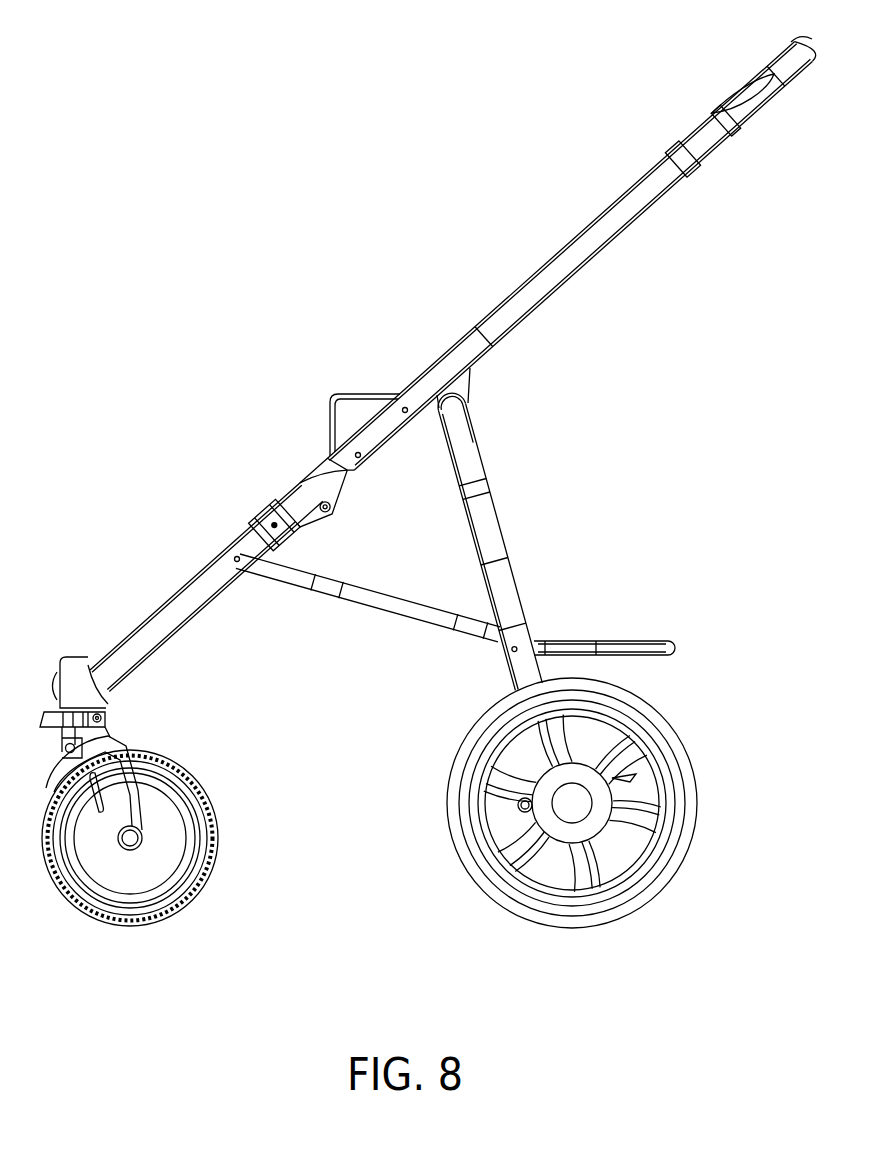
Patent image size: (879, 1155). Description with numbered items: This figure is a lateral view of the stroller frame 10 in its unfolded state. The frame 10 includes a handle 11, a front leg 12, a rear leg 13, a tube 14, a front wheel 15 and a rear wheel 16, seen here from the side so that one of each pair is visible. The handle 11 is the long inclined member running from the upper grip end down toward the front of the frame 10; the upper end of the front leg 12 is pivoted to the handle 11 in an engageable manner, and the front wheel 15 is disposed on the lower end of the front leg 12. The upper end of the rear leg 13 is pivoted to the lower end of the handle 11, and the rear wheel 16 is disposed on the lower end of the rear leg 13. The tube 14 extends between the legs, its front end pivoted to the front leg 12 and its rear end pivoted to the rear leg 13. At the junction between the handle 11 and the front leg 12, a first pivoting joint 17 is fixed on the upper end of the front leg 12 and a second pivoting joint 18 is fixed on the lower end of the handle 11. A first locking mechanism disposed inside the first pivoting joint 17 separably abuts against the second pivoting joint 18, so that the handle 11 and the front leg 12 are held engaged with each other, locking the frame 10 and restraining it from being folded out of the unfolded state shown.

The frame 10 is at (129, 38).
The handle 11 is at (542, 287).
The front leg 12 is at (192, 598).
The rear leg 13 is at (485, 522).
The tube 14 is at (388, 606).
The front wheel 15 is at (90, 888).
The rear wheel 16 is at (648, 878).
The first pivoting joint 17 is at (297, 497).
The second pivoting joint 18 is at (330, 463).